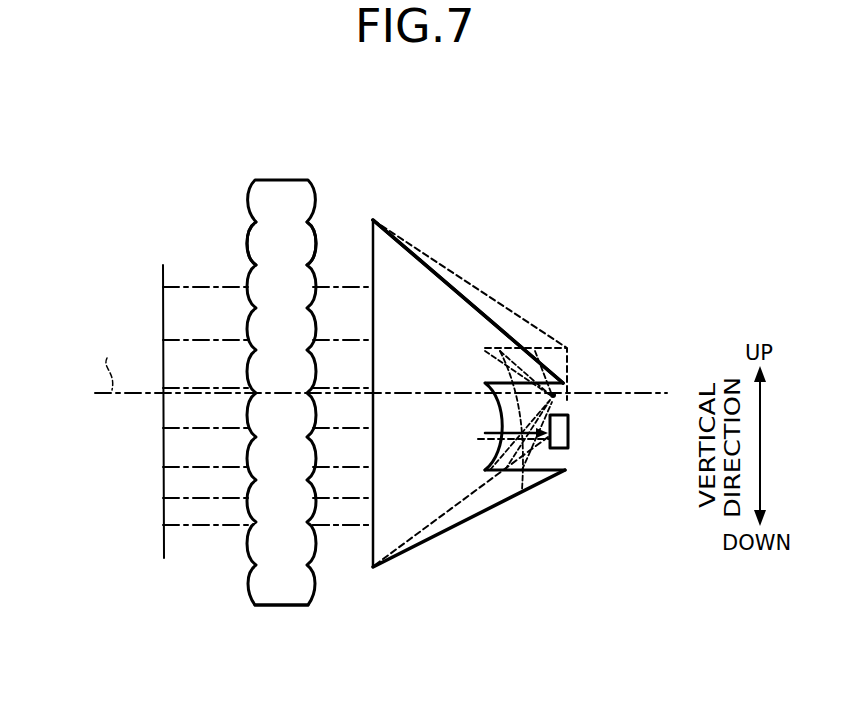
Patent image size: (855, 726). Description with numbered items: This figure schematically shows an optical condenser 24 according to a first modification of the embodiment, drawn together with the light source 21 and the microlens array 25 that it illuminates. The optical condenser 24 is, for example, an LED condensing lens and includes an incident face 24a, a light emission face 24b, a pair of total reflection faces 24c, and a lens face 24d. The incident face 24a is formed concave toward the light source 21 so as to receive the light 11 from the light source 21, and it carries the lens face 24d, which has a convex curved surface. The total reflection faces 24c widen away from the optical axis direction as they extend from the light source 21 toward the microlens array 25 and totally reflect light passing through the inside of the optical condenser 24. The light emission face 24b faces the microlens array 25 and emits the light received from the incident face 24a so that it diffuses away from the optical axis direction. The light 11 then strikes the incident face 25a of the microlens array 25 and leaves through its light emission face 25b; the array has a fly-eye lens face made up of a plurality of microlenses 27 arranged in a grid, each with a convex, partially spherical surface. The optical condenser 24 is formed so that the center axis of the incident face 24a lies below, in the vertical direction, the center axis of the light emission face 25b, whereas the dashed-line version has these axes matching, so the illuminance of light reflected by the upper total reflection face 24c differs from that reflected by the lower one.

The light 11 is at (342, 528).
The light source 21 is at (569, 425).
The optical condenser 24 is at (545, 318).
The incident face 24a is at (570, 402).
The light emission face 24b is at (372, 262).
The total reflection face 24c is at (482, 310).
The lens face 24d is at (548, 472).
The microlens array 25 is at (281, 172).
The incident face 25a is at (327, 200).
The light emission face 25b is at (234, 200).
The microlens 27 is at (314, 597).